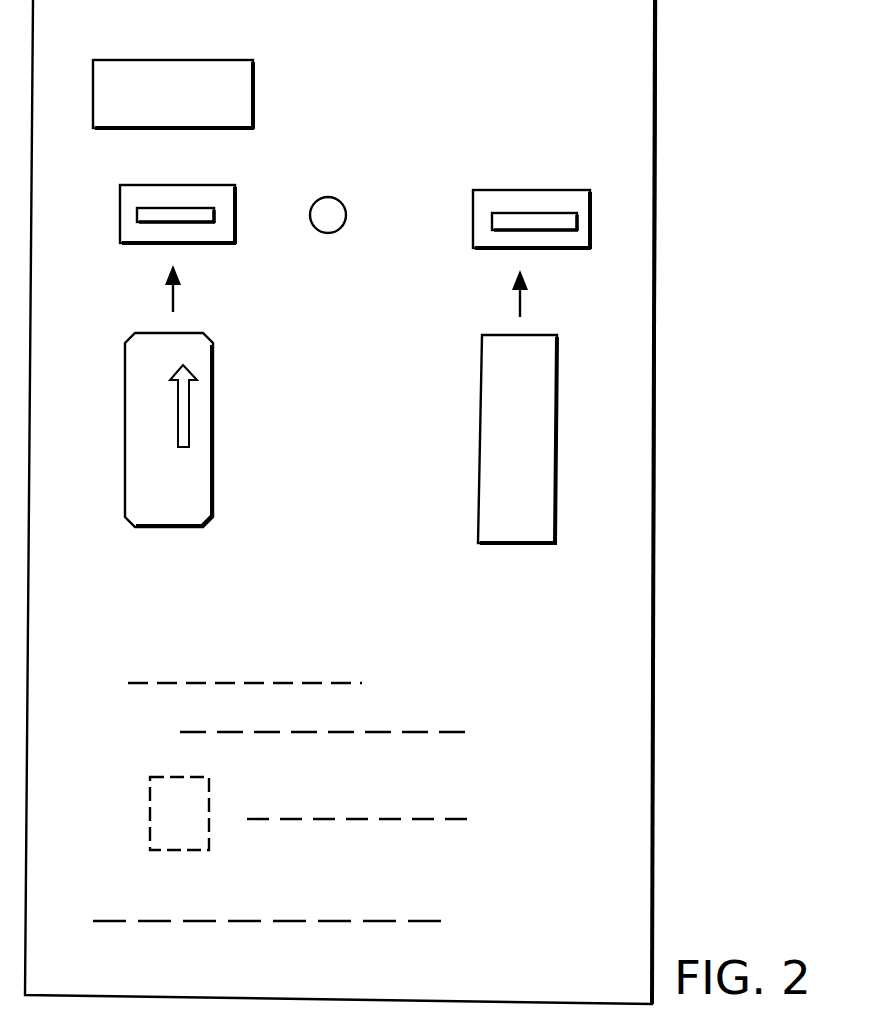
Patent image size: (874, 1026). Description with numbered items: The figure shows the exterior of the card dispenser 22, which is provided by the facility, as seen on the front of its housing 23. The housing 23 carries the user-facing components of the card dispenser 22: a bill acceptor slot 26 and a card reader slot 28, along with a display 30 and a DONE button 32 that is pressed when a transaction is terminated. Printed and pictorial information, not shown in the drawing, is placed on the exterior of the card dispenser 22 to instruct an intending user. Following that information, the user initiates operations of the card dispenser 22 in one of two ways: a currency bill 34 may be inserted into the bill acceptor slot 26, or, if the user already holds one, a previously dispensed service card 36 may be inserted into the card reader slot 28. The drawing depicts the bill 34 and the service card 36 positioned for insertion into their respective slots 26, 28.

The card dispenser 22 is at (674, 314).
The housing 23 is at (617, 47).
The bill acceptor slot 26 is at (521, 190).
The card reader slot 28 is at (152, 184).
The display 30 is at (246, 62).
The DONE button 32 is at (333, 201).
The currency bill 34 is at (482, 398).
The service card 36 is at (213, 400).